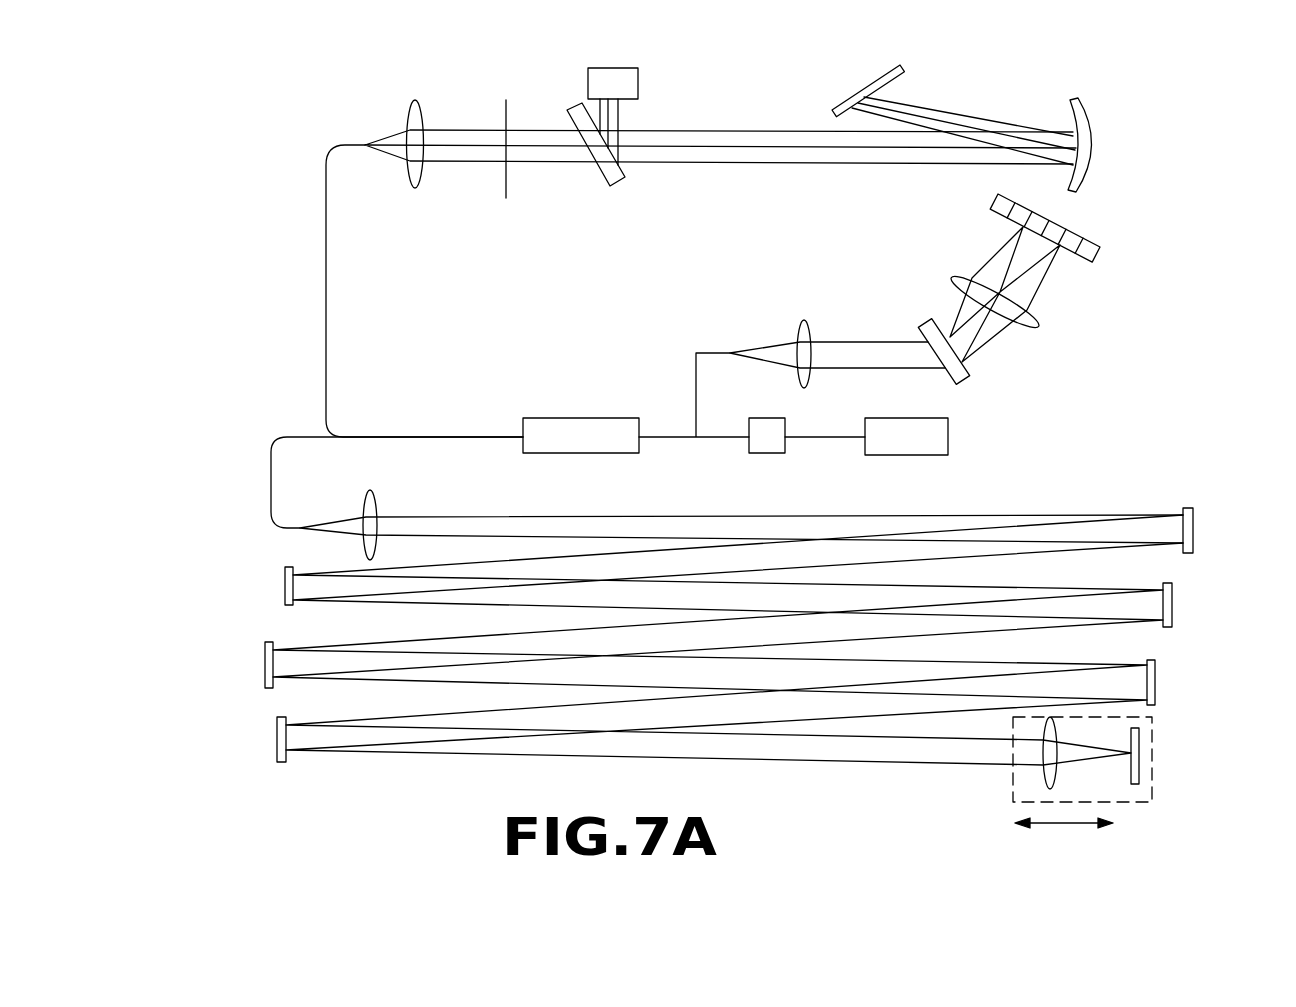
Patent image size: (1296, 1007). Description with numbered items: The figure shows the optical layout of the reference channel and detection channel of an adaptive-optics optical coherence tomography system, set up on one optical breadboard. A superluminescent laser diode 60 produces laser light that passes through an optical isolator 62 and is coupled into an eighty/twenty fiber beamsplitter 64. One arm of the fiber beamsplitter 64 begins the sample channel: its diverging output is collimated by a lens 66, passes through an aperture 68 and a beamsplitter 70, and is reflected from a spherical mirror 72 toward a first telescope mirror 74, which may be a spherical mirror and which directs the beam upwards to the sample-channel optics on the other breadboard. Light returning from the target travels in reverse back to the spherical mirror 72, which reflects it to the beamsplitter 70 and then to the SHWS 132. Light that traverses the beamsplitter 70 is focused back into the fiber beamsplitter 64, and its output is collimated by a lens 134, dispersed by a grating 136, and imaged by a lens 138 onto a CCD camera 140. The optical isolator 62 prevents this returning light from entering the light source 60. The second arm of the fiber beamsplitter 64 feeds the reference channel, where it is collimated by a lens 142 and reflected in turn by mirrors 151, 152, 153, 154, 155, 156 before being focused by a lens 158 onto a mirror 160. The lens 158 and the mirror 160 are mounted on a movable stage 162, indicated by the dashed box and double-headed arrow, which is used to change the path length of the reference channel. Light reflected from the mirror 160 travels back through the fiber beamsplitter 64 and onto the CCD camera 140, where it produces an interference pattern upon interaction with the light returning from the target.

The superluminescent laser diode 60 is at (955, 440).
The optical isolator 62 is at (790, 445).
The 80/20 fiber beamsplitter 64 is at (585, 415).
The lens 66 is at (410, 112).
The aperture 68 is at (505, 112).
The beamsplitter 70 is at (602, 172).
The spherical mirror 72 is at (1095, 130).
The first telescope mirror 74 is at (858, 94).
The SHWS 132 is at (640, 82).
The lens 134 is at (799, 330).
The grating 136 is at (972, 374).
The lens 138 is at (1040, 318).
The CCD camera 140 is at (1078, 230).
The lens 142 is at (378, 500).
The mirror 151 is at (1195, 532).
The mirror 152 is at (283, 590).
The mirror 153 is at (1173, 610).
The mirror 154 is at (262, 668).
The mirror 155 is at (1140, 755).
The mirror 156 is at (275, 745).
The lens 158 is at (1040, 775).
The mirror 160 is at (1156, 685).
The movable stage 162 is at (1152, 722).